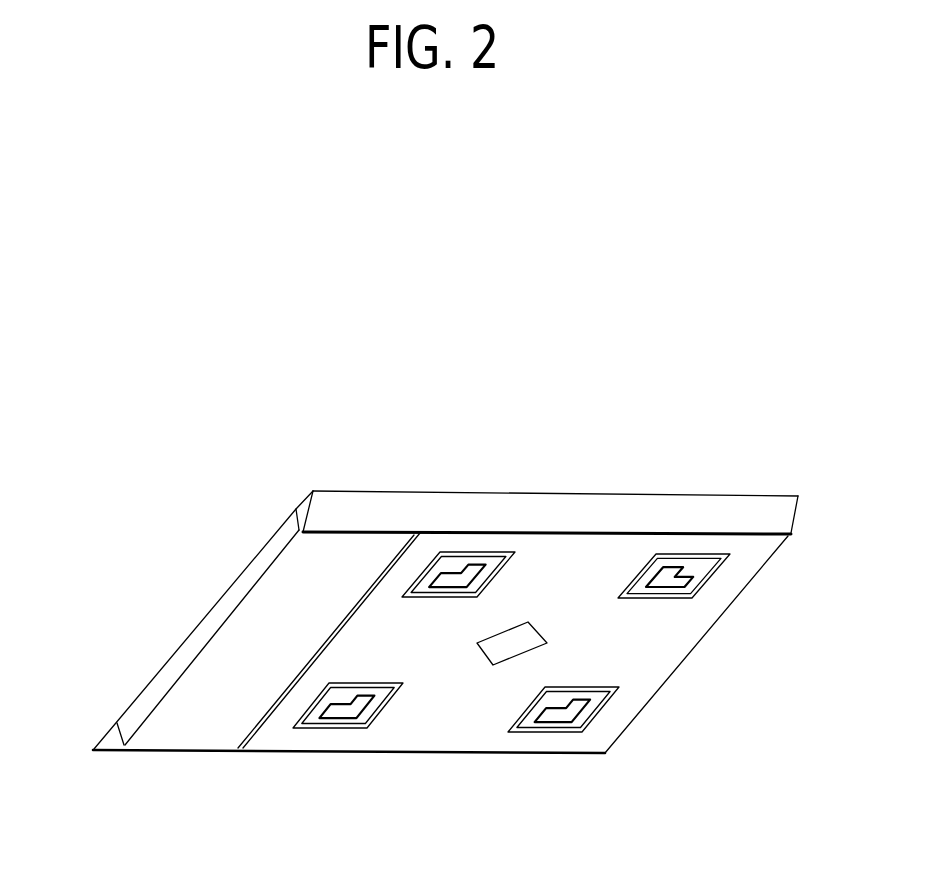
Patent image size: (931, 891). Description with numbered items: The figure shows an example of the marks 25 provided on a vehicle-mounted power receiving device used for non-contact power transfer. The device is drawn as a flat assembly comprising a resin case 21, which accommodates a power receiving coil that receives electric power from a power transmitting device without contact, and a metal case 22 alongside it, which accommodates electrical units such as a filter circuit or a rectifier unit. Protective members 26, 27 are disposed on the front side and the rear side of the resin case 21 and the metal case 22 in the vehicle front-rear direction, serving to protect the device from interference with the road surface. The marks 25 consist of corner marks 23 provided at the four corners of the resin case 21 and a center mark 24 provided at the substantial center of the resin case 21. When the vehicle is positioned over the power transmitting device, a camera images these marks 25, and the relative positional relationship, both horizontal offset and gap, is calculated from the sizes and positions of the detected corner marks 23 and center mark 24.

The resin case 21 is at (743, 574).
The metal case 22 is at (256, 618).
The corner marks 23 is at (367, 728).
The center mark 24 is at (500, 652).
The marks 25 is at (511, 721).
The protective member 26 is at (355, 506).
The protective member 27 is at (107, 738).